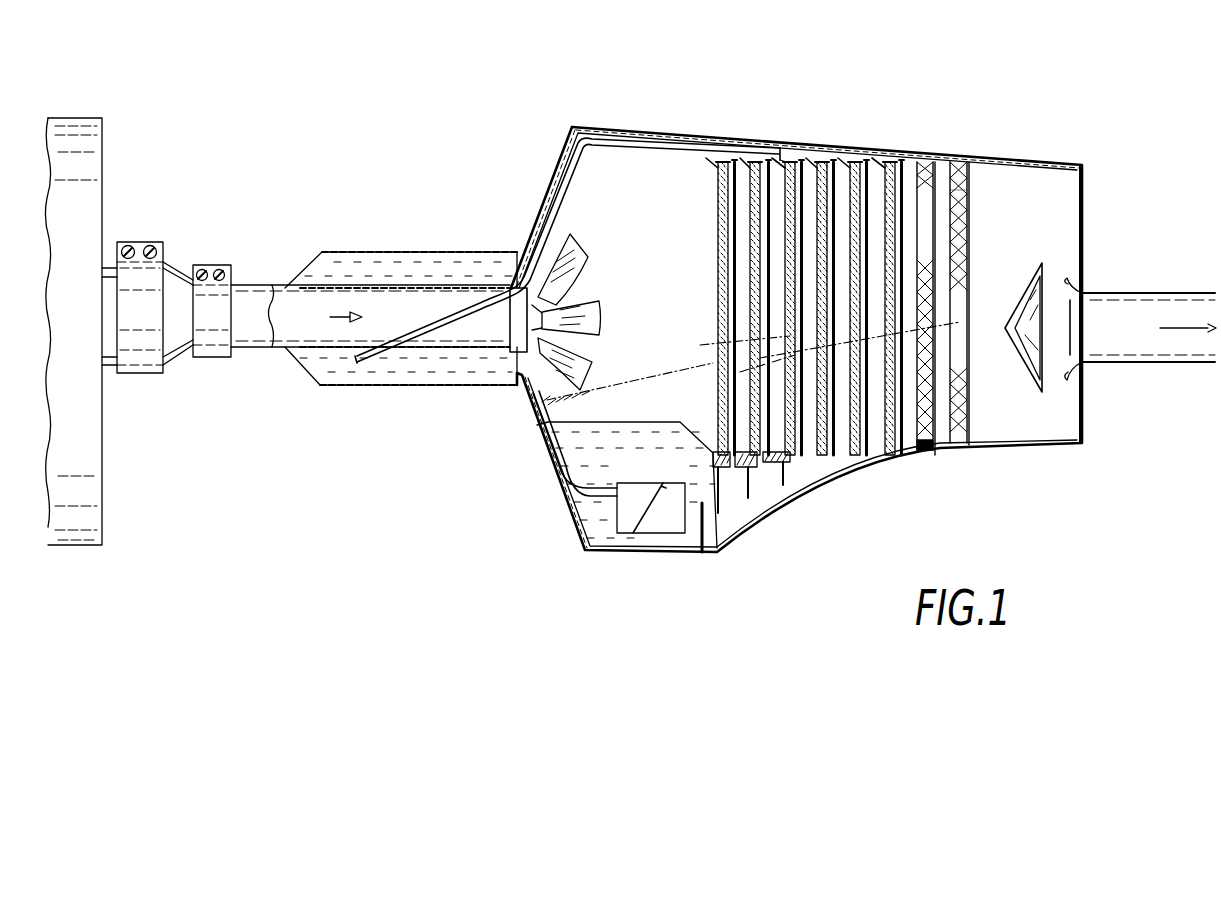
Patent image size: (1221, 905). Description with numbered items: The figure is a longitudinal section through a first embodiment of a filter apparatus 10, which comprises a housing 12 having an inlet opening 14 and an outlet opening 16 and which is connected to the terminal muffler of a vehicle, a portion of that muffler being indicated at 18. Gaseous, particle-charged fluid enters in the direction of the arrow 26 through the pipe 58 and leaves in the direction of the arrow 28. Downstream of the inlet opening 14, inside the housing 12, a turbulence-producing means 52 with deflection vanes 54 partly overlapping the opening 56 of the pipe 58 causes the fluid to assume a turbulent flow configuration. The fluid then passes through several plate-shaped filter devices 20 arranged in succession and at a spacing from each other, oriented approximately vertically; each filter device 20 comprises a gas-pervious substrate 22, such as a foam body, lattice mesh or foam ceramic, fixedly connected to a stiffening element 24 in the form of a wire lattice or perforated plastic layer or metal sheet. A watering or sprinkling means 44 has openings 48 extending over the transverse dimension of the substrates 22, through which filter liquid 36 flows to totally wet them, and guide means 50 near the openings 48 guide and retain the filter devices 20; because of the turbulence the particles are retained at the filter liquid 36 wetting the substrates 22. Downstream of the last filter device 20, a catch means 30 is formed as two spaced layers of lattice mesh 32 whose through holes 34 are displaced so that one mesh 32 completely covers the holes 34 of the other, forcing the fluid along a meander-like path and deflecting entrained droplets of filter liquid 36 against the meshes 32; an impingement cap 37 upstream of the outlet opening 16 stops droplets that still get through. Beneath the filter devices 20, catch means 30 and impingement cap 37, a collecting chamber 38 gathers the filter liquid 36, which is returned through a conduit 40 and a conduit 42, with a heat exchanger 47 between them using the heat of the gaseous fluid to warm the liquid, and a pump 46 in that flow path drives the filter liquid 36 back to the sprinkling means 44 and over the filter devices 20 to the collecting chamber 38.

The filter apparatus 10 is at (817, 142).
The housing 12 is at (631, 178).
The inlet opening 14 is at (252, 310).
The outlet opening 16 is at (1142, 312).
The terminal muffler 18 is at (104, 142).
The filter devices 20 is at (719, 354).
The gas-pervious substrate 22 is at (720, 210).
The stiffening element 24 is at (730, 260).
The arrow 26 is at (340, 320).
The arrow 28 is at (1192, 330).
The catch means 30 is at (977, 186).
The lattice mesh 32 is at (930, 285).
The through holes 34 is at (927, 217).
The filter liquid 36 is at (380, 265).
The impingement cap 37 is at (1035, 280).
The collecting chamber 38 is at (731, 510).
The conduit 40 is at (558, 485).
The conduit 42 is at (550, 175).
The watering or sprinkling means 44 is at (779, 152).
The pump 46 is at (655, 515).
The heat exchanger 47 is at (395, 390).
The openings 48 is at (718, 183).
The guide means 50 is at (773, 167).
The turbulence-producing means 52 is at (571, 225).
The deflection vanes 54 is at (572, 257).
The opening 56 is at (532, 310).
The pipe 58 is at (423, 282).